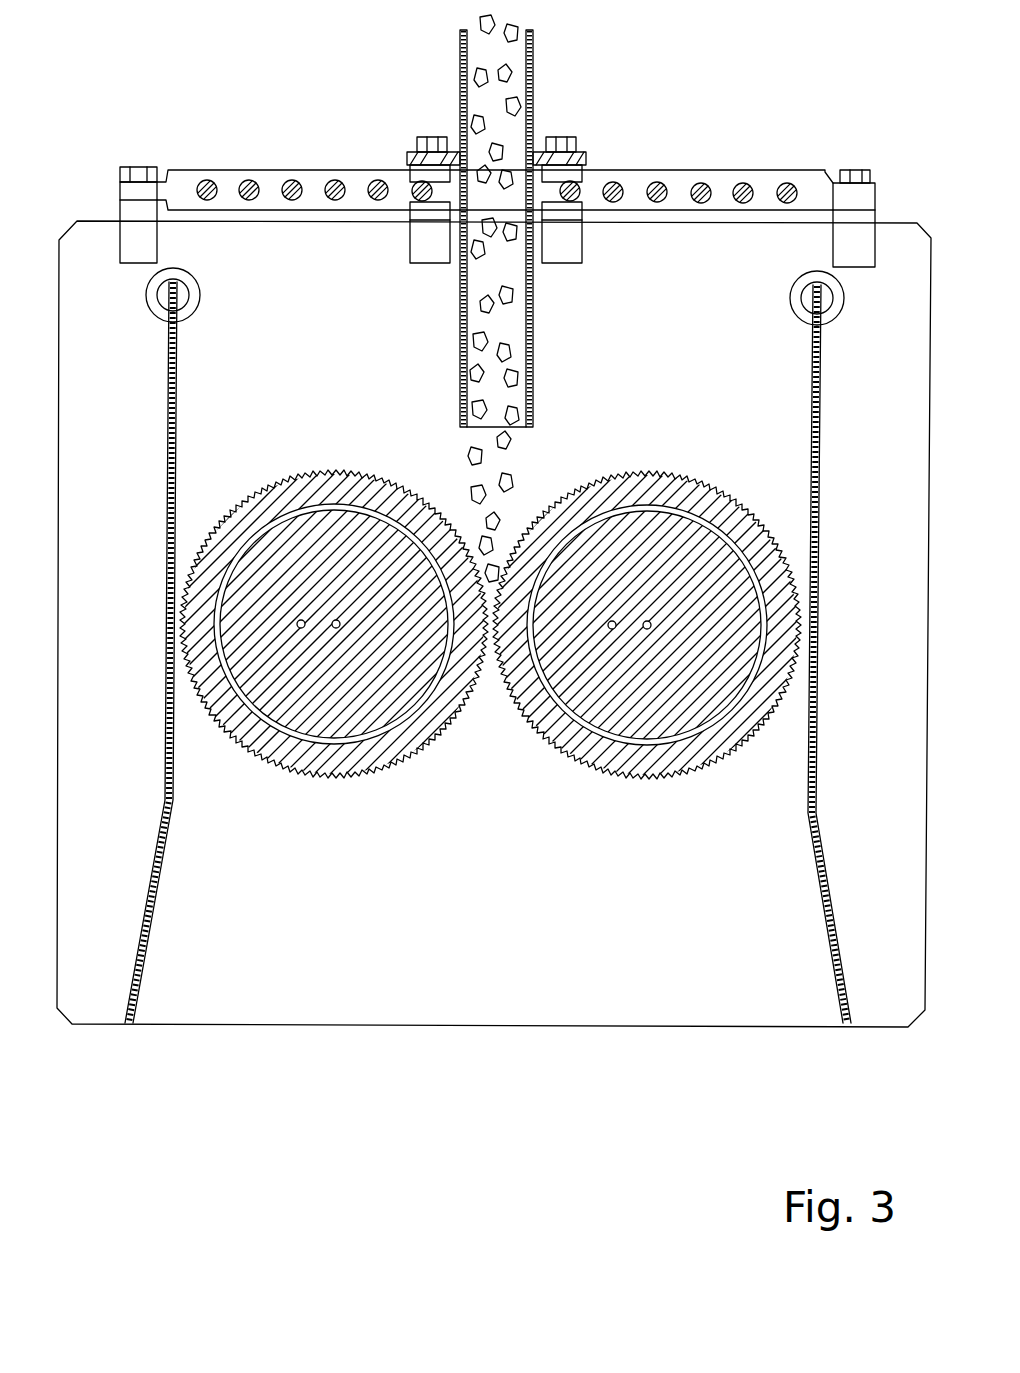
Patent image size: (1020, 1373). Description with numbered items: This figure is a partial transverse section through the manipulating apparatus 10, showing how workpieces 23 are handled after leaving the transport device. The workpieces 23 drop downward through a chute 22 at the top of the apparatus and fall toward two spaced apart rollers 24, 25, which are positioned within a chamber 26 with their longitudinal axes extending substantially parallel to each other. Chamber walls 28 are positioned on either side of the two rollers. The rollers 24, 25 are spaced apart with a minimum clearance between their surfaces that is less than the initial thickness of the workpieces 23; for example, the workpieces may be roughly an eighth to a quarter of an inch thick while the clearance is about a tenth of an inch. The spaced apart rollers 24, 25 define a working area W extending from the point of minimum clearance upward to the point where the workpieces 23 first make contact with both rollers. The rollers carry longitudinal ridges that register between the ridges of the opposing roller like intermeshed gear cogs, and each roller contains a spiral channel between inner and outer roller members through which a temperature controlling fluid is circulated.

The manipulating apparatus 10 is at (889, 203).
The chute 22 is at (534, 328).
The workpieces 23 is at (511, 477).
The roller 24 is at (646, 624).
The roller 25 is at (333, 623).
The chamber 26 is at (420, 438).
The chamber walls 28 is at (178, 452).
The working area W is at (500, 549).